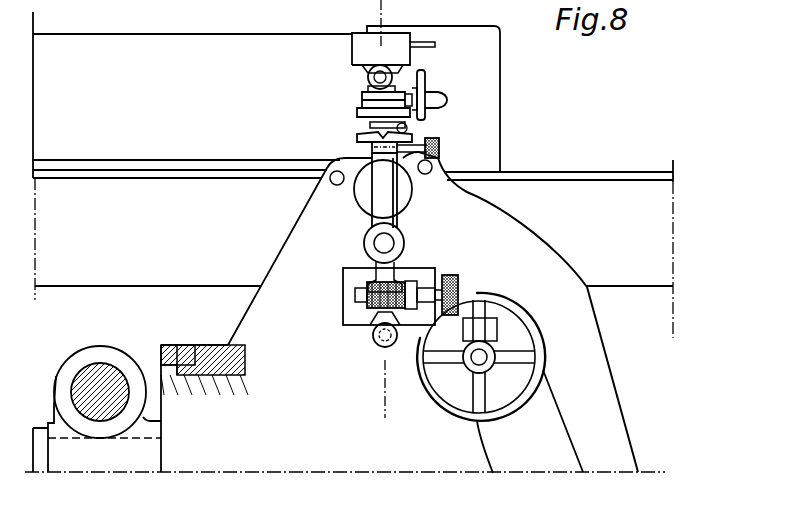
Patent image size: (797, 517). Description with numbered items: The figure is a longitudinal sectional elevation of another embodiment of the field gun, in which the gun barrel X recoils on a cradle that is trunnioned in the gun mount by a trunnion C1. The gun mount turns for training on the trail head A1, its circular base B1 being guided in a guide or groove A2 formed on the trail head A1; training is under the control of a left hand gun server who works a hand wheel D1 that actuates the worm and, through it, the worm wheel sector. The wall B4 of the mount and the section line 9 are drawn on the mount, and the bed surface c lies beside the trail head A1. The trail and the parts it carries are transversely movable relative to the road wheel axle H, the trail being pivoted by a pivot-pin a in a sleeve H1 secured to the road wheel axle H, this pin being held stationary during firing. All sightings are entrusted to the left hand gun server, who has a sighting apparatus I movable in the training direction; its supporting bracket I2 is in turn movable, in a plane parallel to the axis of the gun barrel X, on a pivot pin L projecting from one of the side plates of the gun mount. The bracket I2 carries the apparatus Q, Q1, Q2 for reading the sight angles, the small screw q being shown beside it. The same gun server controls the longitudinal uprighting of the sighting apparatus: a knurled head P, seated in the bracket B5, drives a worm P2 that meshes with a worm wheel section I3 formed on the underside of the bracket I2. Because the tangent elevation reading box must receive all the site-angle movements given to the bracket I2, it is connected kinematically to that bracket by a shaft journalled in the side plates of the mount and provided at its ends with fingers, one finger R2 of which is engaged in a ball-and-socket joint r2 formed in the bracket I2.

The gun barrel X is at (251, 44).
The section line 9 is at (373, 209).
The circular base B1 is at (210, 356).
The column wall B4 is at (608, 407).
The trail head A1 is at (183, 462).
The guide or groove A2 is at (181, 350).
The bed surface c is at (638, 278).
The road wheel axle H is at (105, 372).
The sleeve H1 is at (56, 427).
The pivot-pin a is at (44, 465).
The sighting apparatus I is at (362, 104).
The sight angle reading apparatus Q2 is at (372, 133).
The sight angle reading apparatus Q1 is at (372, 149).
The knurled screw q is at (440, 150).
The sight angle reading apparatus Q is at (380, 165).
The trunnion C1 is at (407, 201).
The supporting bracket I2 is at (380, 219).
The pivot pin L is at (396, 244).
The ball-and-socket joint r2 is at (378, 282).
The worm wheel section I3 is at (398, 290).
The bracket B5 is at (355, 300).
The knurled knob P is at (460, 284).
The worm P2 is at (372, 323).
The finger R2 is at (374, 350).
The hand wheel D1 is at (532, 333).